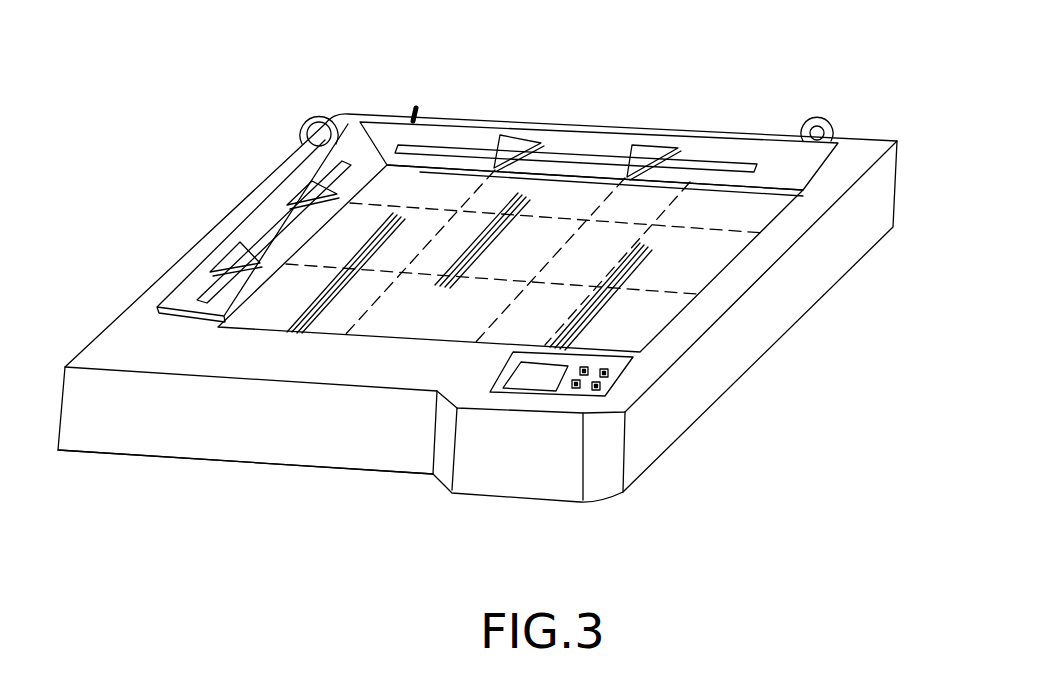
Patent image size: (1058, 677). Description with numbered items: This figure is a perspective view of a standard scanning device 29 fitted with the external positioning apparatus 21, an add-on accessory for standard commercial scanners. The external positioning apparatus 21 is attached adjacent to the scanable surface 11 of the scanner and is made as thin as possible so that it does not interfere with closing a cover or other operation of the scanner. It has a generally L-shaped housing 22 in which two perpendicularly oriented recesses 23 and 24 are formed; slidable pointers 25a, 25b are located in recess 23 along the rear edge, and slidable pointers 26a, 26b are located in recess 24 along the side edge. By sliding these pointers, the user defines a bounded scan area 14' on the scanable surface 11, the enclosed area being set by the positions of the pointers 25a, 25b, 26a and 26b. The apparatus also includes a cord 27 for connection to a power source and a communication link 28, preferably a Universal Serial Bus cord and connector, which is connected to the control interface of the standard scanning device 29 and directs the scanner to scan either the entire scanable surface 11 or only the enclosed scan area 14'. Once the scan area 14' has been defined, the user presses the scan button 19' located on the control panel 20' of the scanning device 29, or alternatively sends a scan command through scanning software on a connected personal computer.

The scanable surface 11 is at (638, 317).
The bounded scan area 14' is at (525, 354).
The scan button 19' is at (535, 457).
The control panel 20' is at (627, 404).
The external positioning apparatus 21 is at (416, 110).
The L-shaped housing 22 is at (800, 153).
The recess 23 is at (443, 147).
The recess 24 is at (280, 232).
The slidable pointer 25a is at (513, 140).
The slidable pointer 25b is at (647, 153).
The slidable pointer 26a is at (227, 268).
The slidable pointer 26b is at (300, 188).
The cord 27 is at (810, 120).
The communication link 28 is at (313, 117).
The standard scanning device 29 is at (273, 467).